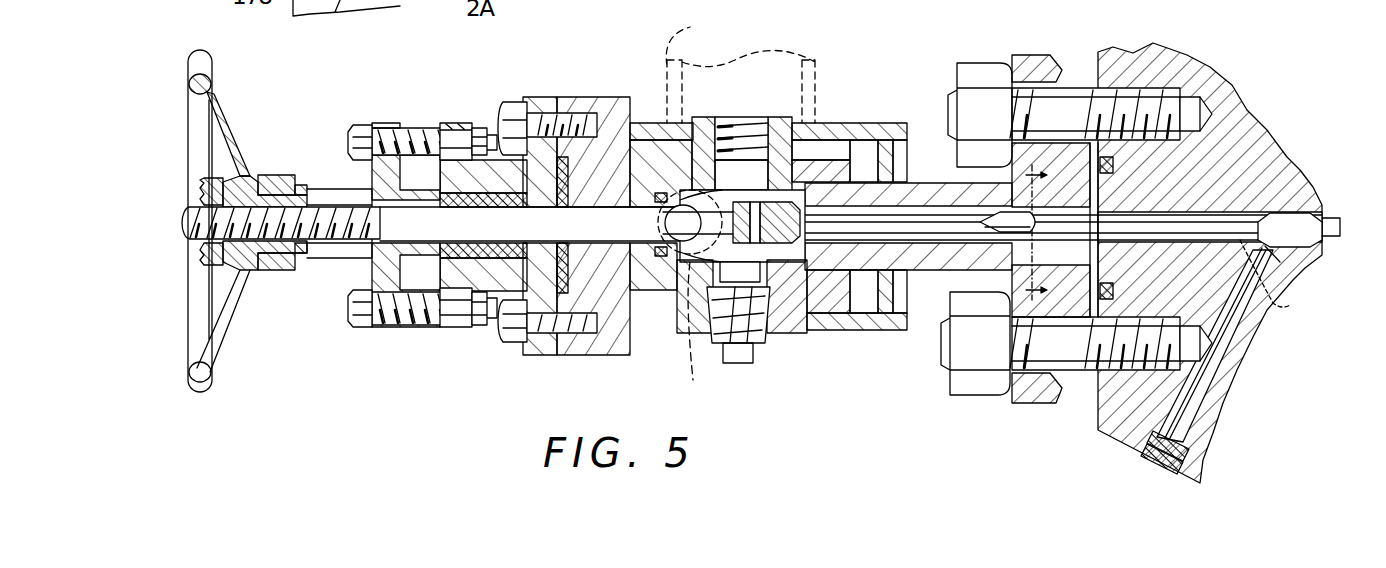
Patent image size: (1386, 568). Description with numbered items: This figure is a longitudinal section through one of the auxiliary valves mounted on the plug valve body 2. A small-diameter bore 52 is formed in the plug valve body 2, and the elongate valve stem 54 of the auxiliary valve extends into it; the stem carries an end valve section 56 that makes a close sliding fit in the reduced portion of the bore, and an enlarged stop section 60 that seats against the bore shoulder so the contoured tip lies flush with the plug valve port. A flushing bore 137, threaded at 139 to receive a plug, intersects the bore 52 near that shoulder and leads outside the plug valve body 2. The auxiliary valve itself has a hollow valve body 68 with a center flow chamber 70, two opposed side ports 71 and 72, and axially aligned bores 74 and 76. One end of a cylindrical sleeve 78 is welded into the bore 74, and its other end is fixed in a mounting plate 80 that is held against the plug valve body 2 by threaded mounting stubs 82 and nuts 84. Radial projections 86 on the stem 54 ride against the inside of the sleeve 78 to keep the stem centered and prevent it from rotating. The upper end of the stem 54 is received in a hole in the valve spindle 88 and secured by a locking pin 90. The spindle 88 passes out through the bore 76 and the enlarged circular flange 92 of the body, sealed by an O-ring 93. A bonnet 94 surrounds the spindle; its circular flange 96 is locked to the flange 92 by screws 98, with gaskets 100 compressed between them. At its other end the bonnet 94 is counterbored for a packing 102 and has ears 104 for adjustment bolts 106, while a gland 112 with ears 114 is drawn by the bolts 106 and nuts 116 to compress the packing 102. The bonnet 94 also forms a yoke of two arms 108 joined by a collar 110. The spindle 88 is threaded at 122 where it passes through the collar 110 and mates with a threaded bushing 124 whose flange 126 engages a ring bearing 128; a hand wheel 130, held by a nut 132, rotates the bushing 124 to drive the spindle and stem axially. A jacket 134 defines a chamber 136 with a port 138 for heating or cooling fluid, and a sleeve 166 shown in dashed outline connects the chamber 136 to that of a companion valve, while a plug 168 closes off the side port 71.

The plug valve body 2 is at (1255, 120).
The bore 52 is at (1248, 212).
The valve stem 54 is at (1290, 305).
The end valve section 56 is at (1322, 230).
The stop section 60 is at (1278, 233).
The valve body 68 is at (785, 310).
The center flow chamber 70 is at (780, 192).
The side port 71 is at (750, 300).
The side port 72 is at (715, 168).
The bore 74 is at (835, 290).
The bore 76 is at (645, 278).
The cylindrical sleeve 78 is at (940, 165).
The mounting plate 80 is at (1036, 55).
The threaded mounting stub 82 is at (1075, 95).
The nut 84 is at (980, 70).
The radial projection 86 is at (985, 228).
The valve spindle 88 is at (640, 226).
The locking pin 90 is at (731, 237).
The circular flange 92 is at (600, 357).
The O-ring 93 is at (662, 210).
The bonnet 94 is at (492, 292).
The circular flange 96 is at (545, 360).
The screw 98 is at (512, 105).
The gasket 100 is at (572, 226).
The packing 102 is at (500, 243).
The ear 104 is at (460, 122).
The adjustment bolt 106 is at (405, 125).
The arm 108 is at (335, 258).
The collar 110 is at (275, 175).
The gland 112 is at (418, 200).
The ear 114 is at (375, 127).
The nut 116 is at (482, 107).
The threaded section 122 is at (190, 220).
The bushing 124 is at (230, 262).
The flange 126 is at (310, 190).
The ring bearing 128 is at (280, 268).
The hand wheel 130 is at (190, 75).
The nut 132 is at (205, 186).
The jacket 134 is at (648, 123).
The chamber 136 is at (865, 295).
The bore 137 is at (1205, 385).
The port 138 is at (688, 330).
The threaded portion 139 is at (1160, 470).
The sleeve 166 is at (740, 69).
The plug 168 is at (735, 345).